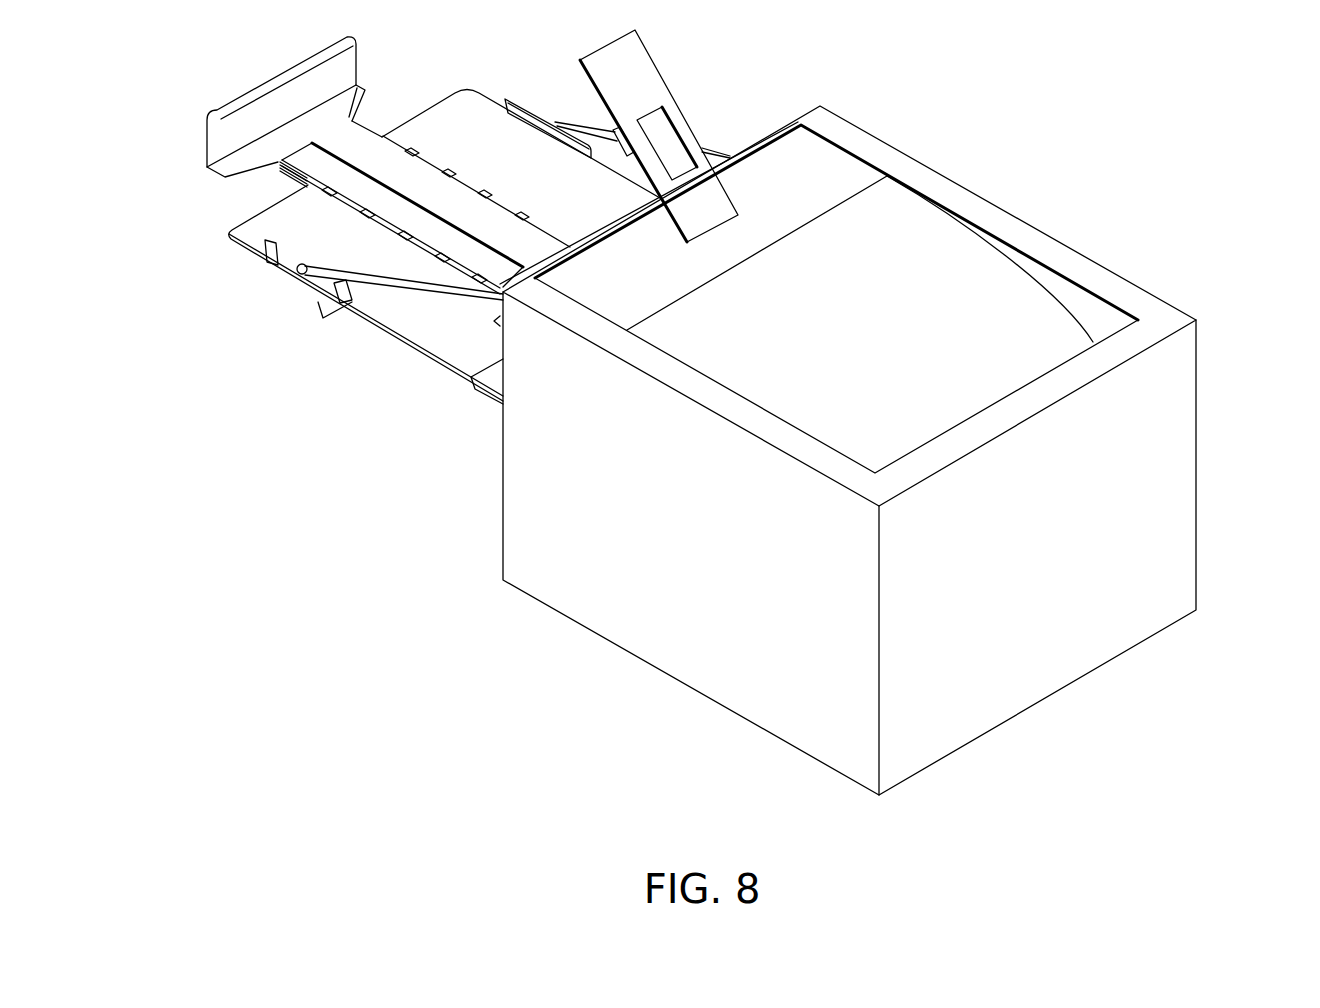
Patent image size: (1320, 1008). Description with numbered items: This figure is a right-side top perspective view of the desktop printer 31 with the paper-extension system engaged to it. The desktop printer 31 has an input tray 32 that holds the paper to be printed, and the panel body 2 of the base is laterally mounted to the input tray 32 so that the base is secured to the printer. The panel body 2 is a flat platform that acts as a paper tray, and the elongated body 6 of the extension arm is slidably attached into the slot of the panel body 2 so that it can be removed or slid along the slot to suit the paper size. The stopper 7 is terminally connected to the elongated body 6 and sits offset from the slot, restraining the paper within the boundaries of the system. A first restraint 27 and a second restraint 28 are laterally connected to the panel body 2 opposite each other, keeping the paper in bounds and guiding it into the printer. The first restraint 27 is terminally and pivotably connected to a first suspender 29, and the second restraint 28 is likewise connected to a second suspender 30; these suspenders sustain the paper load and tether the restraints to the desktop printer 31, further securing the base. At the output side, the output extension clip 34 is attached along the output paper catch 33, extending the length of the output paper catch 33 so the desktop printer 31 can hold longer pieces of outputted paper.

The panel body 2 is at (373, 313).
The elongated body 6 is at (489, 226).
The stopper 7 is at (168, 160).
The first restraint 27 is at (527, 120).
The second restraint 28 is at (283, 260).
The first suspender 29 is at (600, 123).
The second suspender 30 is at (463, 297).
The desktop printer 31 is at (1188, 380).
The input tray 32 is at (495, 383).
The output paper catch 33 is at (672, 145).
The output extension clip 34 is at (657, 90).